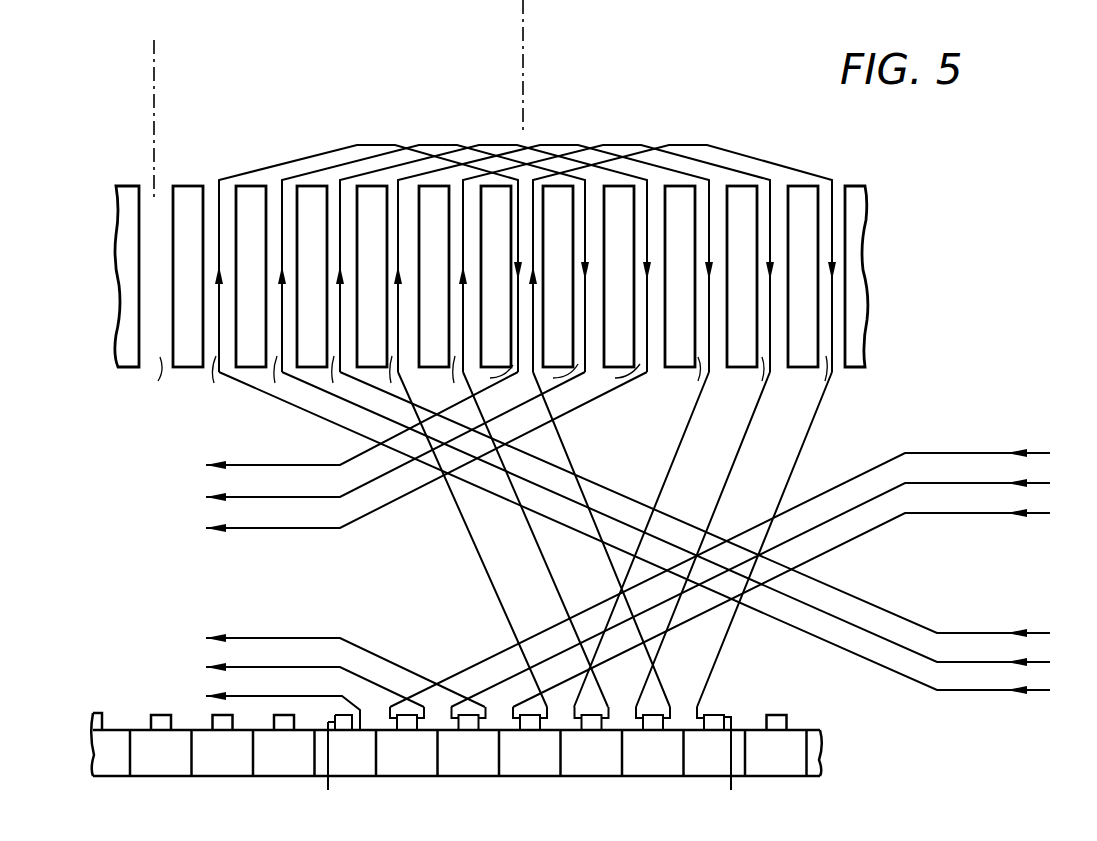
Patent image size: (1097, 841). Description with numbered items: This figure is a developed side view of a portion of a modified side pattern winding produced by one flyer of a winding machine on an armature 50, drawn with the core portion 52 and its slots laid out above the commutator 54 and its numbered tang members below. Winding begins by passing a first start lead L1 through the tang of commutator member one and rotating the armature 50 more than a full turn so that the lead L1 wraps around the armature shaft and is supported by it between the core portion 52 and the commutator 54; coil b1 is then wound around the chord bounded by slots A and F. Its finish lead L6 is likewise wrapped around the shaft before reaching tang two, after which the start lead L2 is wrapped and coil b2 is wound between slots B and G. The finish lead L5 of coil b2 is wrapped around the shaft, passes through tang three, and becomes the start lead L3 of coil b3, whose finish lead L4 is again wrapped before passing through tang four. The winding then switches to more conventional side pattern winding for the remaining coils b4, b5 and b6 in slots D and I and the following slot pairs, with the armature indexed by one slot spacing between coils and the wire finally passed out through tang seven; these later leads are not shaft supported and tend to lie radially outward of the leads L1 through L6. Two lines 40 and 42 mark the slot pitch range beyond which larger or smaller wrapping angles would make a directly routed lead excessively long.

The line 40 is at (160, 76).
The line 42 is at (525, 76).
The armature 50 is at (92, 564).
The core portion 52 is at (104, 310).
The commutator 54 is at (76, 768).
The coil b1 is at (357, 145).
The coil b2 is at (420, 145).
The coil b3 is at (479, 145).
The coil b4 is at (527, 148).
The coil b5 is at (597, 146).
The coil b6 is at (665, 146).
The start lead L1 is at (263, 696).
The start lead L2 is at (262, 667).
The start lead L3 is at (260, 638).
The finish lead L4 is at (253, 528).
The finish lead L5 is at (253, 497).
The finish lead L6 is at (252, 465).